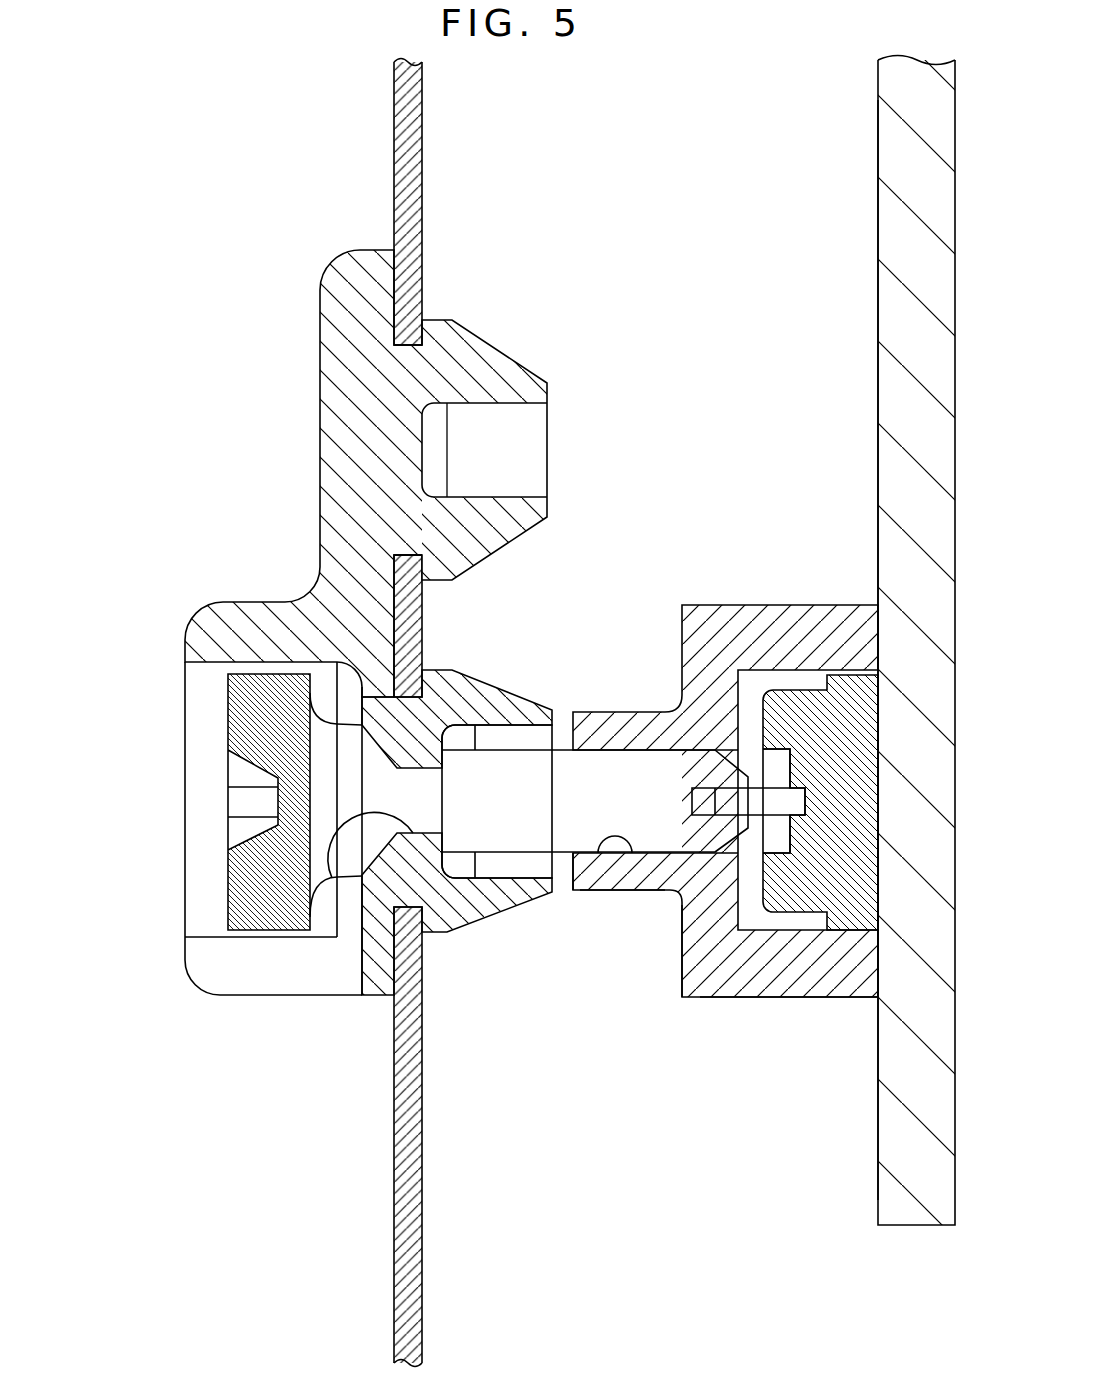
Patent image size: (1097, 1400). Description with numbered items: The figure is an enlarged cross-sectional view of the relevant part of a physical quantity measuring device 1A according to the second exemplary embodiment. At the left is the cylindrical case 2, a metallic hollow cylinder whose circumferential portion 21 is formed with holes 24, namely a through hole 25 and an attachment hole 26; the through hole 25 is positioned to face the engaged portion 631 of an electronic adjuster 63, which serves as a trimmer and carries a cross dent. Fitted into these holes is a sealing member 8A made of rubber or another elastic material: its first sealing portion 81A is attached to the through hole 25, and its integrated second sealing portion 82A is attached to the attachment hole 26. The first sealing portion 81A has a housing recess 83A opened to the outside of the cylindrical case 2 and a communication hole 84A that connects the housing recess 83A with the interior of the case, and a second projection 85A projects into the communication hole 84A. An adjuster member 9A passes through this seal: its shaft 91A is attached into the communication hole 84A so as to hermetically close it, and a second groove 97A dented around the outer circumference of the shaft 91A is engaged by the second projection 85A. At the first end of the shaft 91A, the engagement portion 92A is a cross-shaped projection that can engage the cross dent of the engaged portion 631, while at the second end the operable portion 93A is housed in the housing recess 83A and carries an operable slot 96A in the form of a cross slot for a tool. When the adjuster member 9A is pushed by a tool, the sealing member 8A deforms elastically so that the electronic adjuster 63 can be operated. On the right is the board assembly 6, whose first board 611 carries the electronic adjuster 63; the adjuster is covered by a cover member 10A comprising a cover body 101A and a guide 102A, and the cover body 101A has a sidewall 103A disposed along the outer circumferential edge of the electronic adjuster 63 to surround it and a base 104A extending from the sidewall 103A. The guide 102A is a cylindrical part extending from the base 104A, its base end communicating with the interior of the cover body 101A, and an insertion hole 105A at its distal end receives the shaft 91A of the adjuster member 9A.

The physical quantity measuring device 1A is at (162, 138).
The cylindrical case 2 is at (260, 1230).
The circumferential portion 21 is at (394, 1268).
The holes 24 is at (210, 512).
The through hole 25 is at (307, 587).
The attachment hole 26 is at (408, 553).
The wall 6 is at (786, 314).
The first board 611 is at (877, 232).
The electronic adjuster 63 is at (800, 690).
The engaged portion 631 is at (776, 750).
The sealing member 8A is at (182, 424).
The first sealing portion 81A is at (198, 612).
The second sealing portion 82A is at (319, 330).
The housing recess 83A is at (220, 661).
The communication hole 84A is at (332, 880).
The second projection 85A is at (396, 888).
The adjuster member 9A is at (212, 712).
The shaft 91A is at (520, 724).
The engagement portion 92A is at (704, 745).
The operable portion 93A is at (250, 740).
The operable slot 96A is at (258, 805).
The second groove 97A is at (415, 760).
The cover member 10A is at (707, 1020).
The cover body 101A is at (760, 998).
The guide 102A is at (640, 890).
The sidewall 103A is at (830, 998).
The base 104A is at (681, 977).
The insertion hole 105A is at (600, 890).